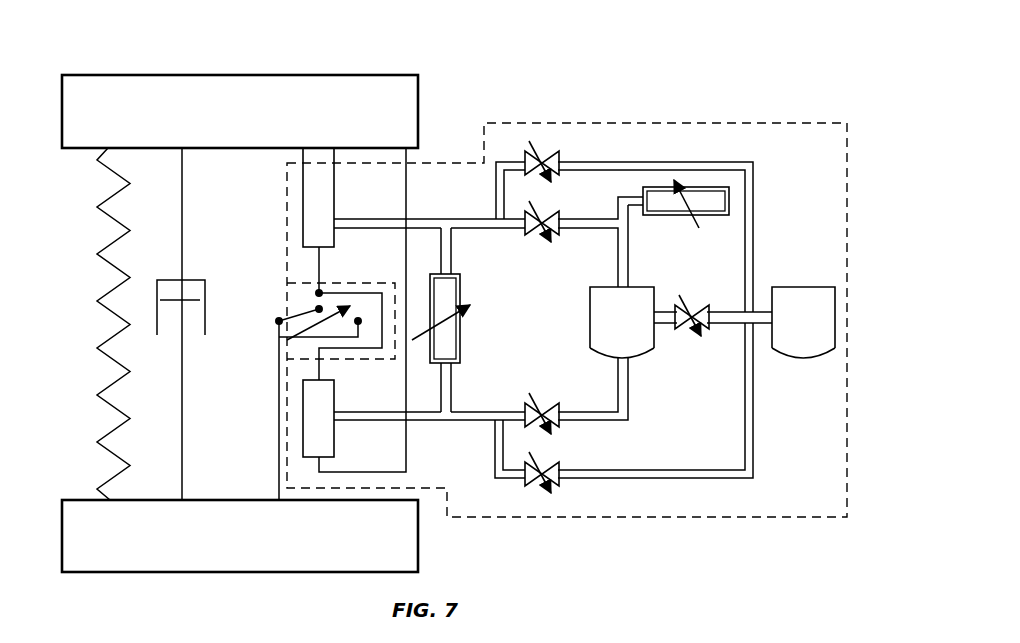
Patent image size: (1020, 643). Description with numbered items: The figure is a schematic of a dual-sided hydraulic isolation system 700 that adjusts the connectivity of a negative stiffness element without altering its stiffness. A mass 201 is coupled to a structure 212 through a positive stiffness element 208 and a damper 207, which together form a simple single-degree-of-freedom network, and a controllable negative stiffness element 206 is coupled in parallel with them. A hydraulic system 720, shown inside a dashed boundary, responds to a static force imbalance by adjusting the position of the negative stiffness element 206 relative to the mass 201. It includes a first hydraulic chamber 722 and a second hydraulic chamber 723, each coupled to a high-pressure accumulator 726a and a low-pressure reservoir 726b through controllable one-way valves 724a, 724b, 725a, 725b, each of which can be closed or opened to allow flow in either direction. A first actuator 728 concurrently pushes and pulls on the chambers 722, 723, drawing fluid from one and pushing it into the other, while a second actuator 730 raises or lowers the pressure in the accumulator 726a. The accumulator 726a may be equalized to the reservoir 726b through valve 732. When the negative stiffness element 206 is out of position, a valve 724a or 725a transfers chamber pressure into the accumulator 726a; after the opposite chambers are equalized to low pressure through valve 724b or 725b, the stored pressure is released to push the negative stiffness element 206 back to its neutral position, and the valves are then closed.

The dual-sided hydraulic isolation system 700 is at (784, 55).
The mass 201 is at (222, 132).
The structure 212 is at (222, 555).
The negative stiffness element 206 is at (312, 311).
The damper 207 is at (186, 282).
The positive stiffness element 208 is at (113, 333).
The hydraulic system 720 is at (677, 519).
The first hydraulic chamber 722 is at (337, 234).
The second hydraulic chamber 723 is at (336, 408).
The valve 724a is at (531, 231).
The valve 724b is at (553, 160).
The valve 725a is at (544, 402).
The valve 725b is at (538, 482).
The high-pressure accumulator 726a is at (600, 327).
The low-pressure reservoir 726b is at (781, 327).
The first actuator 728 is at (461, 321).
The second actuator 730 is at (686, 216).
The valve 732 is at (693, 305).